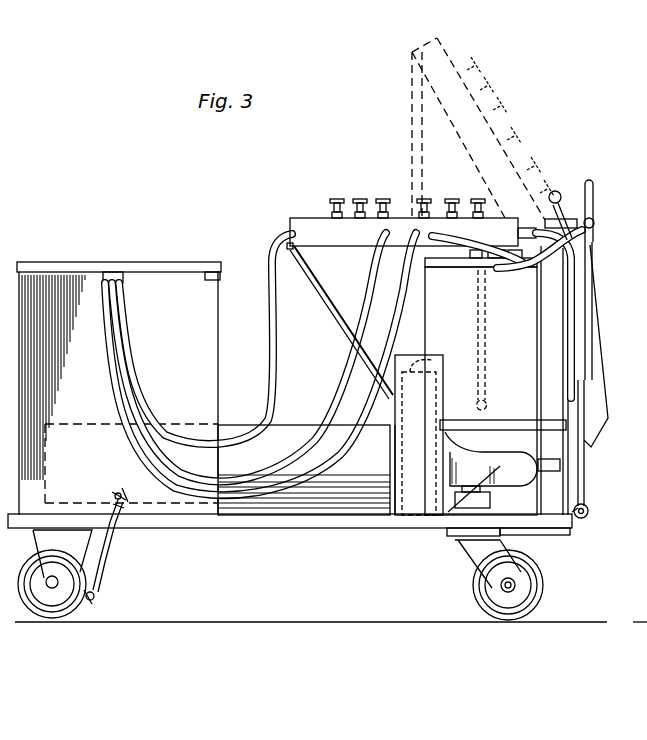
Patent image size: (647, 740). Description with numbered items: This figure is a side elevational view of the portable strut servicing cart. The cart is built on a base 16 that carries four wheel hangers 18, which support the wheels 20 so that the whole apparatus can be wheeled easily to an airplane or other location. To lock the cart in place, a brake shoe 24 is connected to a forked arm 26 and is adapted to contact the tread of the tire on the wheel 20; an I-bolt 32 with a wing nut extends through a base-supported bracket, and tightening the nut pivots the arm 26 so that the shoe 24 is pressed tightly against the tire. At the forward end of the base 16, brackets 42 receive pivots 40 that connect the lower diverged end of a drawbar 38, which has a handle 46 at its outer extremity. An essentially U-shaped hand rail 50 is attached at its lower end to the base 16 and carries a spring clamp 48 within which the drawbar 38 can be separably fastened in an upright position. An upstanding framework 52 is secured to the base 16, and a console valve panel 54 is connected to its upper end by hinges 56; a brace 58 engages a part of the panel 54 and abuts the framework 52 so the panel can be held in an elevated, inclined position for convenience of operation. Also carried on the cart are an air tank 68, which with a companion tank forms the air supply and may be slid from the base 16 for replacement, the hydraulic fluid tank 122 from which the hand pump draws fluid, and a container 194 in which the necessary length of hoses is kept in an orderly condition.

The base 16 is at (363, 521).
The wheel hangers 18 is at (37, 548).
The wheels 20 is at (76, 608).
The brake shoe 24 is at (97, 593).
The forked arm 26 is at (104, 561).
The I-bolt 32 is at (120, 505).
The drawbar 38 is at (592, 270).
The pivots 40 is at (590, 518).
The brackets 42 is at (572, 528).
The handle 46 is at (594, 198).
The spring clamp 48 is at (598, 222).
The hand rail 50 is at (566, 367).
The upstanding framework 52 is at (556, 304).
The console valve panel 54 is at (306, 230).
The hinges 56 is at (517, 260).
The brace 58 is at (410, 153).
The tank 68 is at (273, 500).
The tank 122 is at (437, 305).
The container 194 is at (200, 360).